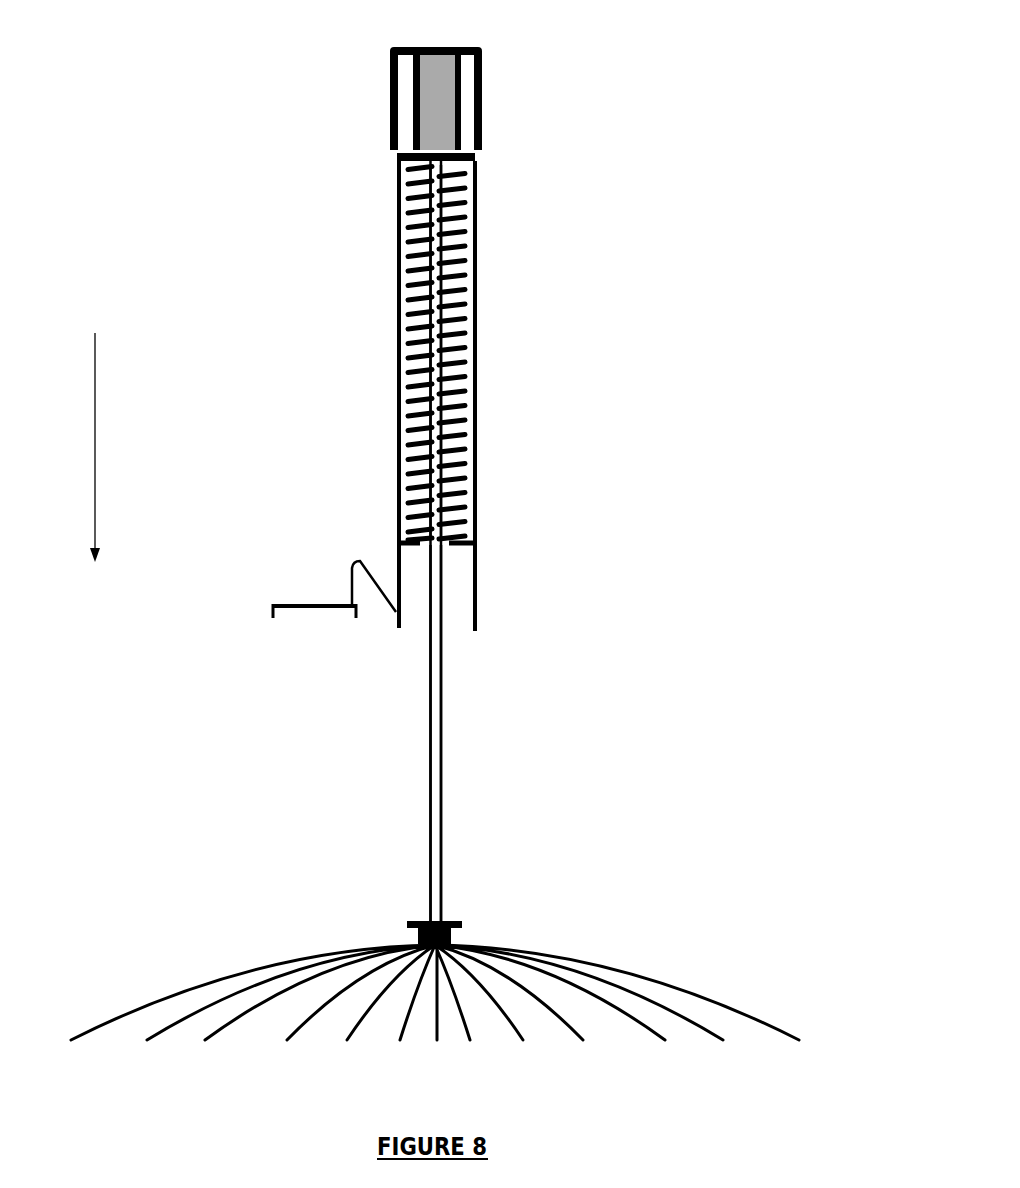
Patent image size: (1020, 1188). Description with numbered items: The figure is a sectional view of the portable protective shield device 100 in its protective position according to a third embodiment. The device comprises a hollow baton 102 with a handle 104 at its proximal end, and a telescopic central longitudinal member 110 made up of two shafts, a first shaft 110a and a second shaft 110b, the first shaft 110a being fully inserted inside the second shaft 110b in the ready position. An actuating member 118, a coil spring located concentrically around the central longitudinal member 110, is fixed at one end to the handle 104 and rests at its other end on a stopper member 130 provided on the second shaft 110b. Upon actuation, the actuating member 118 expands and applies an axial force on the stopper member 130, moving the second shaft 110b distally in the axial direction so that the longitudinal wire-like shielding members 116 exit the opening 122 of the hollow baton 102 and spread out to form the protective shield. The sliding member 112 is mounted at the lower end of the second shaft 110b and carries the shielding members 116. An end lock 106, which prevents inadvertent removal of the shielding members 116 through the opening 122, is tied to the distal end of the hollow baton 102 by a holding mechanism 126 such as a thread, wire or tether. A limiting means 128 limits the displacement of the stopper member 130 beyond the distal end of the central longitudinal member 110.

The portable protective shield device 100 is at (263, 79).
The hollow baton 102 is at (478, 218).
The handle 104 is at (482, 55).
The end lock 106 is at (272, 603).
The central longitudinal member 110 is at (454, 693).
The first shaft 110a is at (408, 280).
The second shaft 110b is at (430, 769).
The sliding member 112 is at (452, 925).
The shielding member 116 is at (567, 952).
The actuating member 118 is at (478, 316).
The opening 122 is at (405, 637).
The holding mechanism 126 is at (352, 563).
The limiting means 128 is at (470, 547).
The stopper member 130 is at (408, 537).